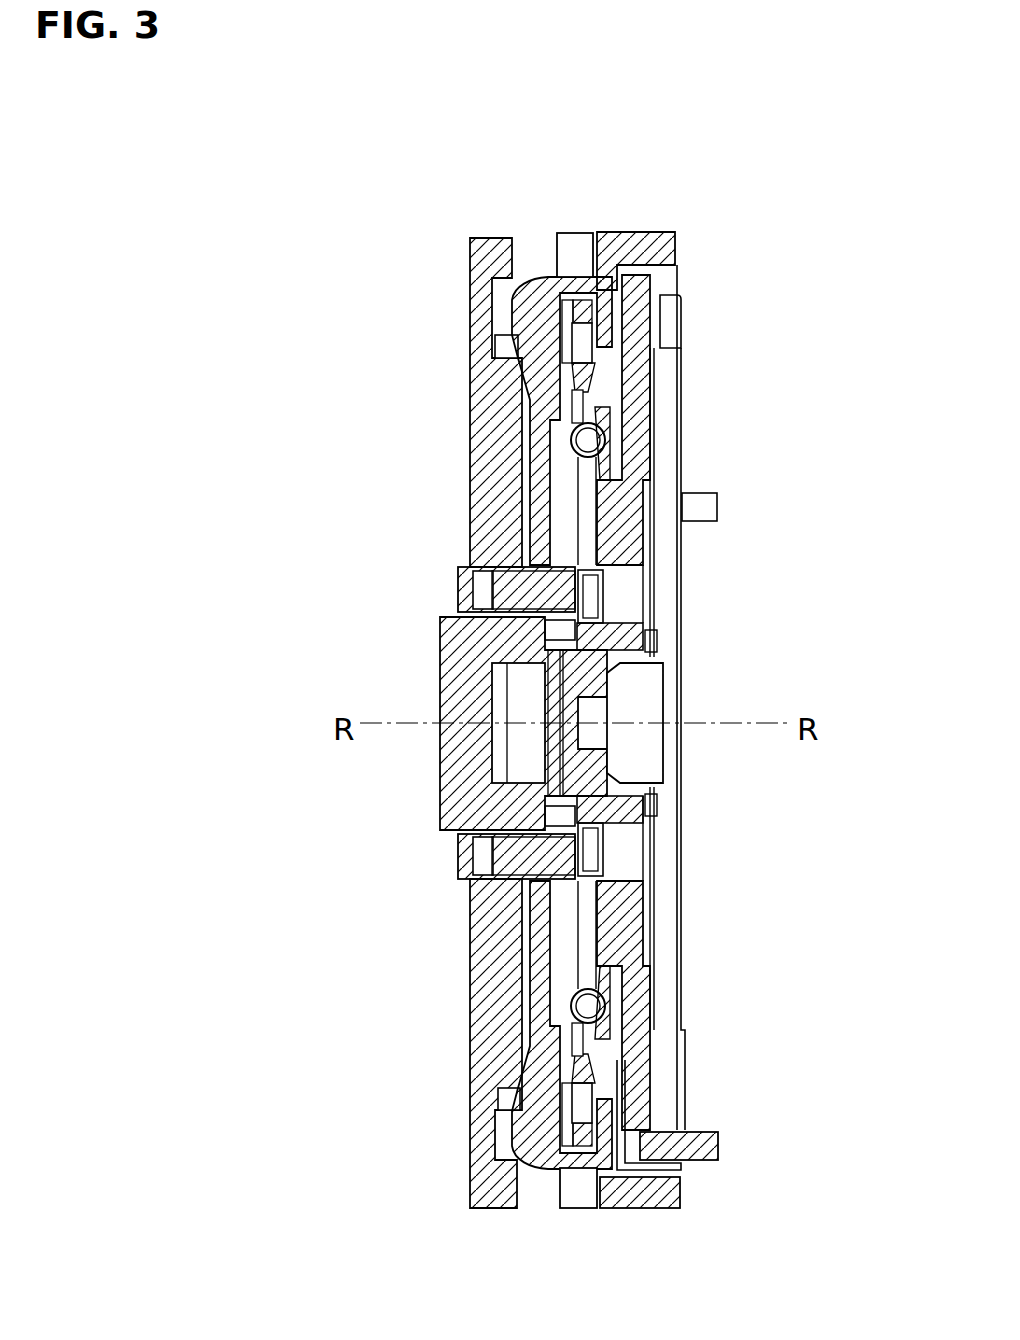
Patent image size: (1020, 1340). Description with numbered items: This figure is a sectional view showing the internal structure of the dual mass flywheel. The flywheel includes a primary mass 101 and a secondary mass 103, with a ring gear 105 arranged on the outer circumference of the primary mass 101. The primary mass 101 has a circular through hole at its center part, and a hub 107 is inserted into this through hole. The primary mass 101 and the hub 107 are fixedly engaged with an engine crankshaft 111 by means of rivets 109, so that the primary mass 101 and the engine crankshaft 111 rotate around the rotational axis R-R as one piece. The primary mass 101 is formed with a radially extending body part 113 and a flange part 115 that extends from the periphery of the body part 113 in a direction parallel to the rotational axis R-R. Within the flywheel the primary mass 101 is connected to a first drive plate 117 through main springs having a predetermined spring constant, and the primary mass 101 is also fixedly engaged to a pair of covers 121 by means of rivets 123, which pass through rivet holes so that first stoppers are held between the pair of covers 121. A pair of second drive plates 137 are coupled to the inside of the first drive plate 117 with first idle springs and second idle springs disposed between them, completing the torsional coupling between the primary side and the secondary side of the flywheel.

The primary mass 101 is at (537, 430).
The secondary mass 103 is at (640, 457).
The ring gear 105 is at (577, 245).
The hub 107 is at (533, 624).
The rivets 109 is at (488, 587).
The engine crankshaft 111 is at (470, 807).
The body part 113 is at (525, 312).
The flange part 115 is at (655, 247).
The first drive plate 117 is at (593, 393).
The covers 121 is at (548, 298).
The rivets 123 is at (625, 335).
The second drive plates 137 is at (593, 950).